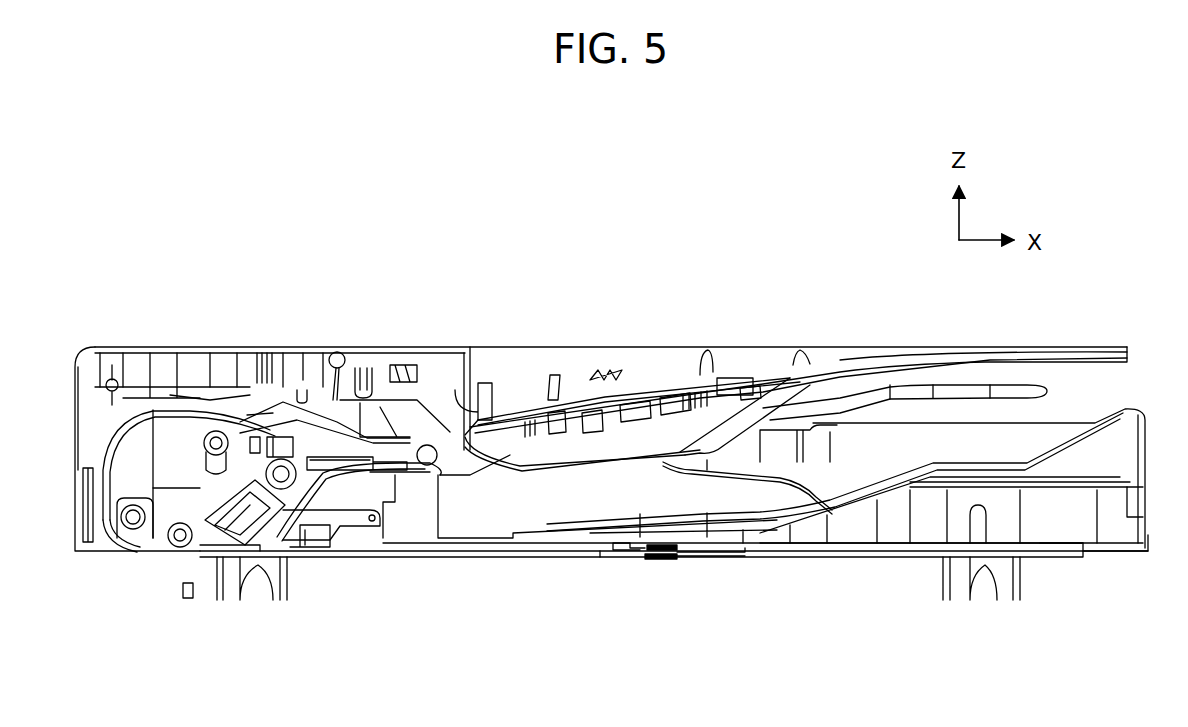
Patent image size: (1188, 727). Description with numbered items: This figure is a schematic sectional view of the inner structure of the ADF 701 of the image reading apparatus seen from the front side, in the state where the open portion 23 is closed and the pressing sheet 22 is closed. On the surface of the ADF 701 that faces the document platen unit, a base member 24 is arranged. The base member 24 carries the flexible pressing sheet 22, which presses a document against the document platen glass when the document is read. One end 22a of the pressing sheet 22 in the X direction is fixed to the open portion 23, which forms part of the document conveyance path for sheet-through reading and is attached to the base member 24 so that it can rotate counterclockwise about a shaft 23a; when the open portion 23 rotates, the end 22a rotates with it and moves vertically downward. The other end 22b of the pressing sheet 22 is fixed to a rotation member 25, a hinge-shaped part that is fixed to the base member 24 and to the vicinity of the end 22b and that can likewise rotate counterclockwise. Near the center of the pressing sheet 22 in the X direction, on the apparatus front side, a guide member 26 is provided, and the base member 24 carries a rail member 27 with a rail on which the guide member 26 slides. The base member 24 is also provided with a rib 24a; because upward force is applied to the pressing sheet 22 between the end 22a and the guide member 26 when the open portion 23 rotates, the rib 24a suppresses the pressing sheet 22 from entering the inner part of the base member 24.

The ADF 701 is at (237, 320).
The pressing sheet 22 is at (483, 560).
The end of pressing sheet 22a is at (257, 553).
The end of pressing sheet 22b is at (1077, 552).
The open portion 23 is at (308, 553).
The shaft 23a is at (378, 550).
The base member 24 is at (425, 507).
The rib 24a is at (487, 530).
The rotation member 25 is at (1065, 560).
The guide member 26 is at (664, 566).
The rail member 27 is at (706, 566).